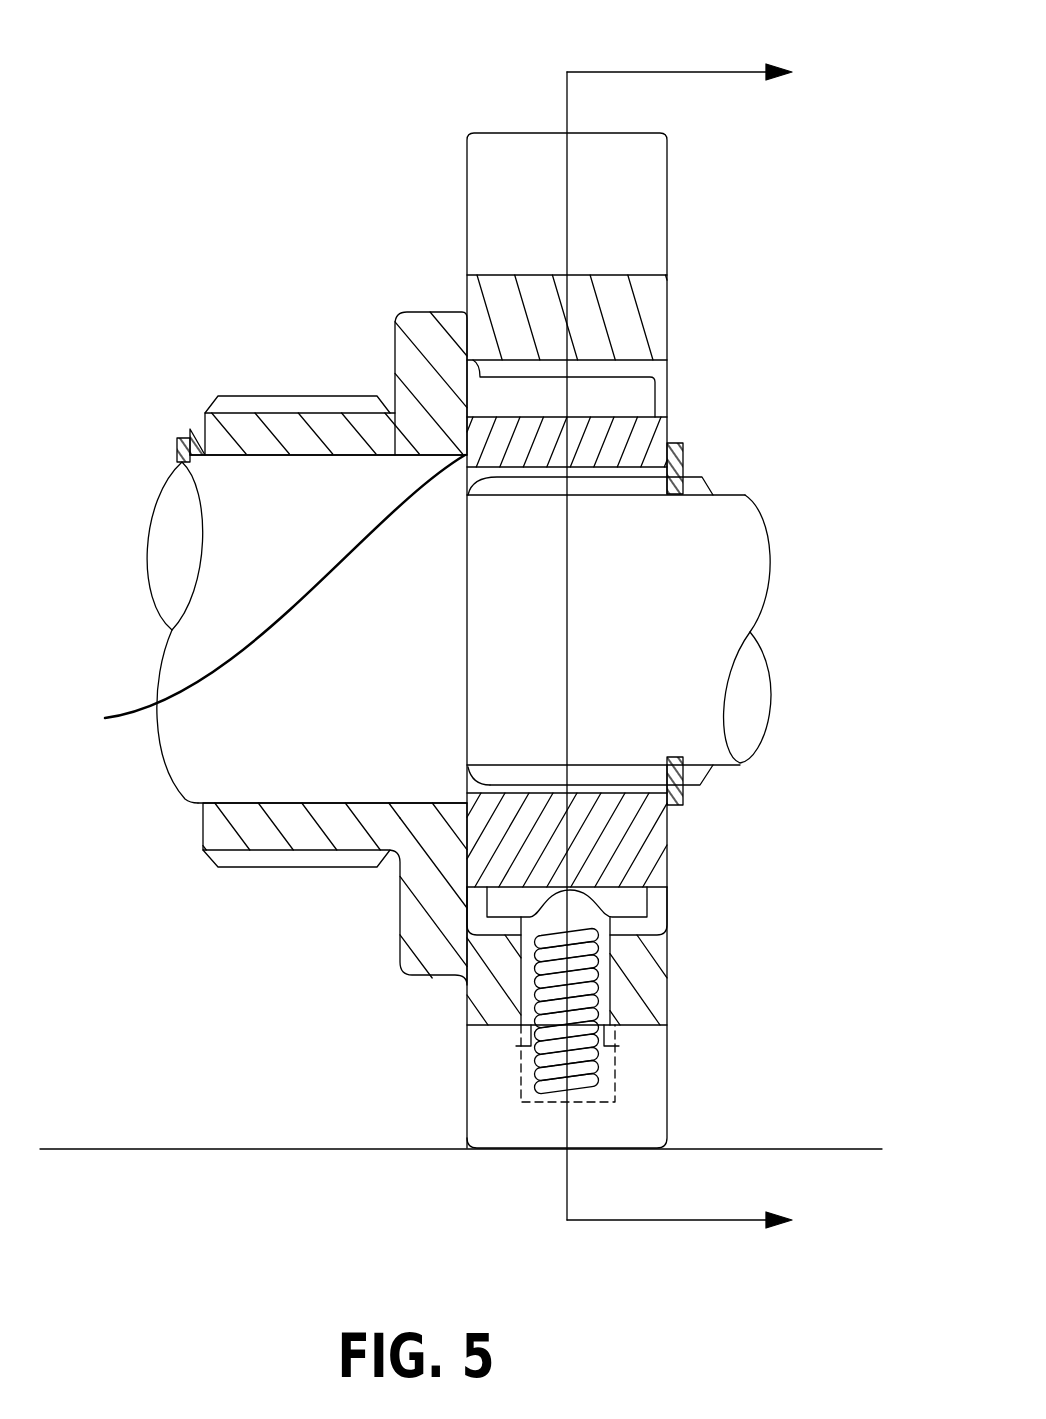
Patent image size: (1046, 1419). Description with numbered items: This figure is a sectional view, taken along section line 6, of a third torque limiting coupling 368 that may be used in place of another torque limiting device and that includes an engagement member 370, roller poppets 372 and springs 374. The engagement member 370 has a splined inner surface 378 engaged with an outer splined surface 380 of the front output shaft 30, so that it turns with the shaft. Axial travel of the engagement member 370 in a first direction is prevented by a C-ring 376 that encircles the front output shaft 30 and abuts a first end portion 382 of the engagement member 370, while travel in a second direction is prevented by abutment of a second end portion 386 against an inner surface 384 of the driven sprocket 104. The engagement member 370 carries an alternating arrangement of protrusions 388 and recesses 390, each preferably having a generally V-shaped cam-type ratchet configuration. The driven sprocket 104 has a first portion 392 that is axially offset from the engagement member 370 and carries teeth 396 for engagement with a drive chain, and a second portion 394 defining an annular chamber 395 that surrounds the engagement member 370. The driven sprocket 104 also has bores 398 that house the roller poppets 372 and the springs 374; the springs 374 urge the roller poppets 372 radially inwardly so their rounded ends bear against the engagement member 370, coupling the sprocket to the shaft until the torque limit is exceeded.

The section line 6- 6 is at (679, 647).
The front output shaft 30 is at (720, 606).
The driven sprocket 104 is at (232, 824).
The third torque limiting coupling 368 is at (217, 242).
The engagement member 370 is at (655, 851).
The roller poppets 372 is at (603, 926).
The springs 374 is at (582, 1068).
The C-ring 376 is at (683, 468).
The splined inner surface 378 is at (478, 785).
The outer splined surface 380 is at (623, 483).
The first end portion 382 is at (667, 437).
The inner surface 384 is at (468, 387).
The second end portion 386 is at (256, 598).
The protrusions 388 is at (603, 373).
The recesses 390 is at (622, 417).
The first portion 392 is at (255, 440).
The second portion 394 is at (640, 303).
The annular chamber 395 is at (550, 364).
The teeth 396 is at (297, 407).
The bores 398 is at (530, 985).